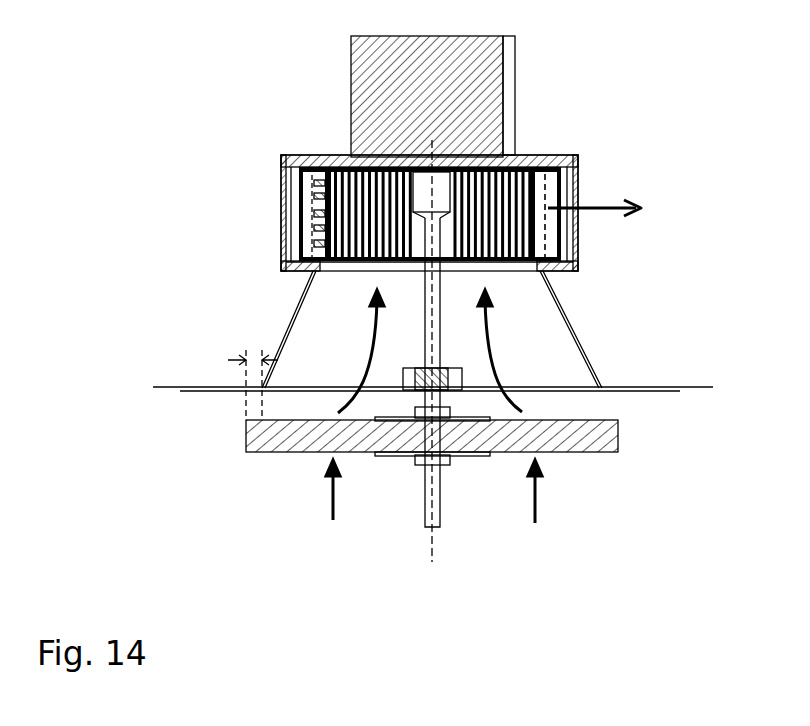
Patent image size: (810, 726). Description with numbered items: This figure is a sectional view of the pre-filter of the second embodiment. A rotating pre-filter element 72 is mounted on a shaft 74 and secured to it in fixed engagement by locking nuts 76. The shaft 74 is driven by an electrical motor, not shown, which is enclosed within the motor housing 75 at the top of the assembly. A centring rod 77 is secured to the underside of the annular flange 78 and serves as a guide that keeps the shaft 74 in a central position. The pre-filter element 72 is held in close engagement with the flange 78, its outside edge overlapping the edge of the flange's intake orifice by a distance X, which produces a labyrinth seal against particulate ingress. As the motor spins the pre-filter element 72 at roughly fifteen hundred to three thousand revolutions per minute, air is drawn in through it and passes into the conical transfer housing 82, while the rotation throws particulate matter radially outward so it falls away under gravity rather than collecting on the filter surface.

The pre-filter element 72 is at (618, 440).
The shaft 74 is at (440, 512).
The motor housing 75 is at (517, 78).
The locking nuts 76 is at (420, 410).
The centring rod 77 is at (653, 393).
The flange 78 is at (192, 397).
The conical transfer housing 82 is at (577, 321).